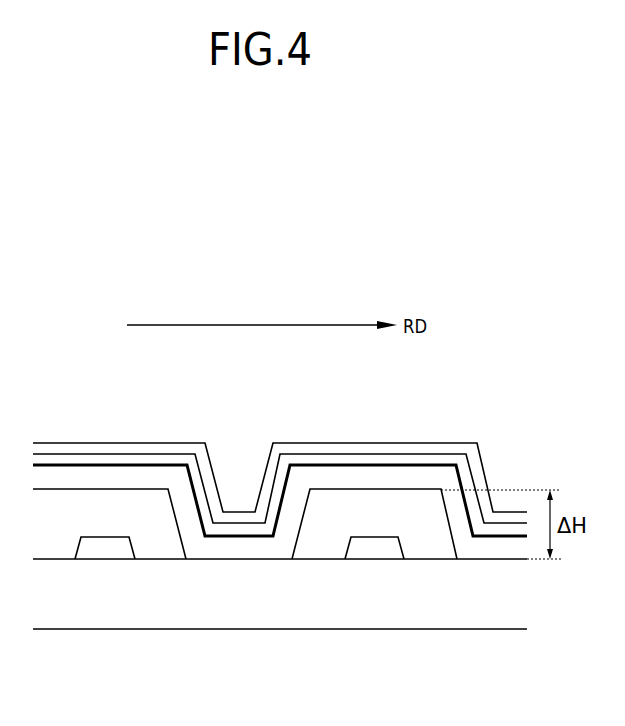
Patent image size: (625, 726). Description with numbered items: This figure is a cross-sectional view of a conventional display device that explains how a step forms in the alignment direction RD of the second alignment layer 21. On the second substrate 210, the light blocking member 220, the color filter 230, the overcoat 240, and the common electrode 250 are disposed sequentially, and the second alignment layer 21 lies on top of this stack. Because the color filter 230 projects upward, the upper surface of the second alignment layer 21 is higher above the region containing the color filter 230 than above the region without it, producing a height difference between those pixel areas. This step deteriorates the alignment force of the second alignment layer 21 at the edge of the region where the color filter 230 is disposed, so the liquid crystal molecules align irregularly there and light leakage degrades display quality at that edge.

The second alignment layer 21 is at (428, 448).
The second substrate 210 is at (489, 608).
The light blocking member 220 is at (103, 552).
The color filter 230 is at (158, 543).
The overcoat 240 is at (258, 548).
The common electrode 250 is at (223, 528).